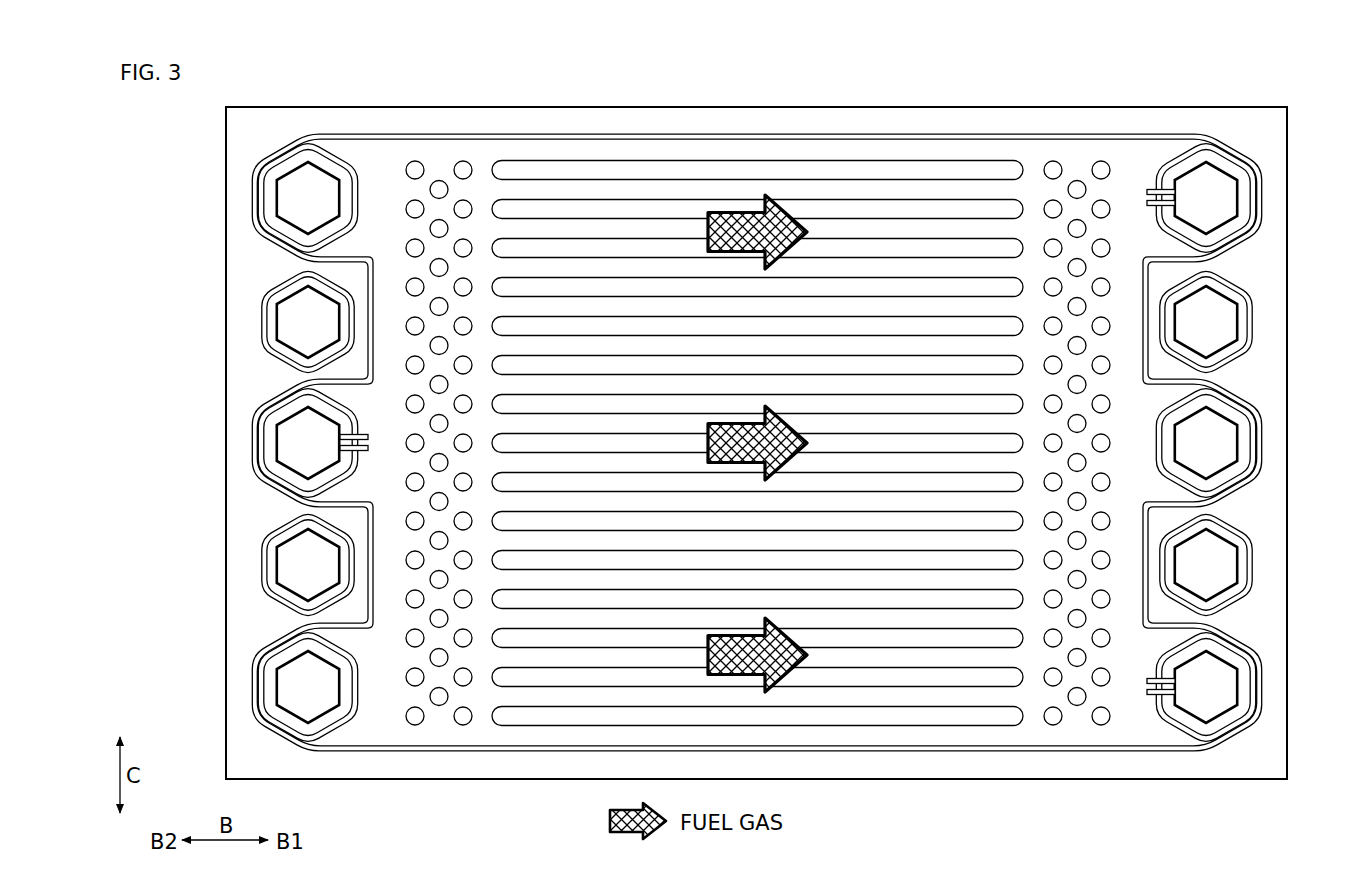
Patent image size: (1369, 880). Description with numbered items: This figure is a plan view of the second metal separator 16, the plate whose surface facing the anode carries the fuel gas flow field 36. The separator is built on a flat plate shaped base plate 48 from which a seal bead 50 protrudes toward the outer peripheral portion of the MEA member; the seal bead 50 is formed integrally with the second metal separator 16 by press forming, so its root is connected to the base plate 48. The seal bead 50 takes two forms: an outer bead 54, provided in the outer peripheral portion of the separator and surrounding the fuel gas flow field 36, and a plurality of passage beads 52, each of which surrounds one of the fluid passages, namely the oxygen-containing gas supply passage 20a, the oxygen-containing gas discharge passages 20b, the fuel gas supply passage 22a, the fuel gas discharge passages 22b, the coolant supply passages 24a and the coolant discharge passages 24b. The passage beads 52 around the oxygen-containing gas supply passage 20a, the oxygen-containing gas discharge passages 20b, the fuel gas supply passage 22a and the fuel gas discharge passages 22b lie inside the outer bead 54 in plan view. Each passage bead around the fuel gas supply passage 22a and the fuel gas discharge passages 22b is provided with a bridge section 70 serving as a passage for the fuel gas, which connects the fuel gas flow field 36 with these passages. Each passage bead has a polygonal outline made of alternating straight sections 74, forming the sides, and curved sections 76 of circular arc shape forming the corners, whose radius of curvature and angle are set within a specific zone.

The second metal separator 16 is at (348, 77).
The base plate 48 is at (515, 124).
The seal bead 50 is at (658, 133).
The passage beads 52 is at (263, 220).
The outer bead 54 is at (755, 134).
The fuel gas flow field 36 is at (891, 228).
The bridge section 70 is at (1144, 180).
The straight sections 74 is at (354, 191).
The curved sections 76 is at (357, 219).
The oxygen-containing gas discharge passages 20b is at (290, 188).
The oxygen-containing gas supply passage 20a is at (1226, 440).
The fuel gas supply passage 22a is at (290, 440).
The fuel gas discharge passages 22b is at (1226, 190).
The coolant supply passages 24a is at (1226, 318).
The coolant discharge passages 24b is at (292, 320).